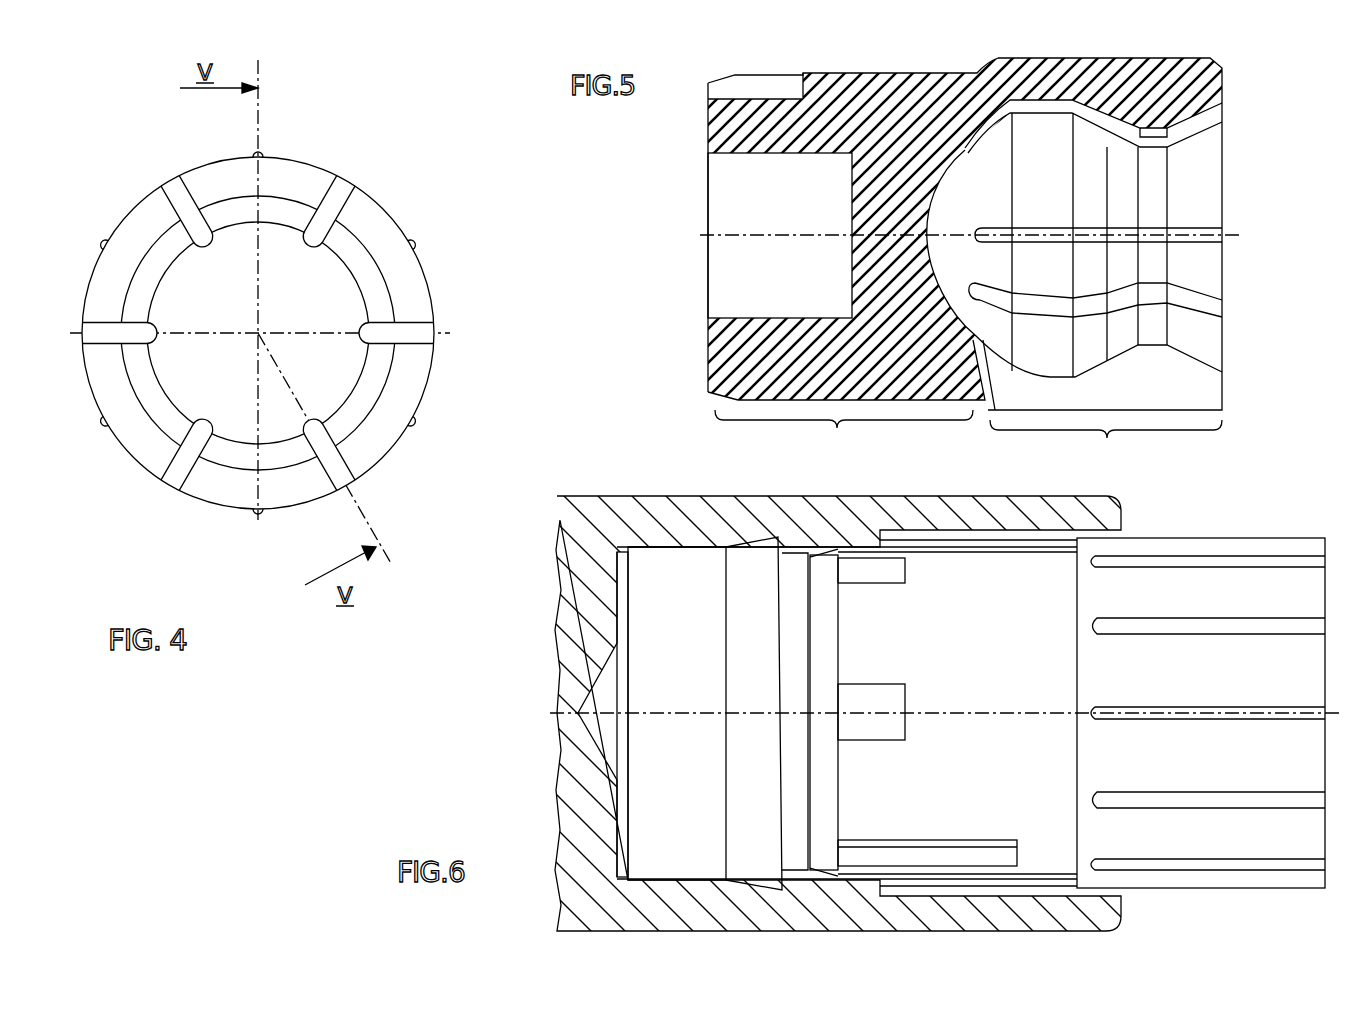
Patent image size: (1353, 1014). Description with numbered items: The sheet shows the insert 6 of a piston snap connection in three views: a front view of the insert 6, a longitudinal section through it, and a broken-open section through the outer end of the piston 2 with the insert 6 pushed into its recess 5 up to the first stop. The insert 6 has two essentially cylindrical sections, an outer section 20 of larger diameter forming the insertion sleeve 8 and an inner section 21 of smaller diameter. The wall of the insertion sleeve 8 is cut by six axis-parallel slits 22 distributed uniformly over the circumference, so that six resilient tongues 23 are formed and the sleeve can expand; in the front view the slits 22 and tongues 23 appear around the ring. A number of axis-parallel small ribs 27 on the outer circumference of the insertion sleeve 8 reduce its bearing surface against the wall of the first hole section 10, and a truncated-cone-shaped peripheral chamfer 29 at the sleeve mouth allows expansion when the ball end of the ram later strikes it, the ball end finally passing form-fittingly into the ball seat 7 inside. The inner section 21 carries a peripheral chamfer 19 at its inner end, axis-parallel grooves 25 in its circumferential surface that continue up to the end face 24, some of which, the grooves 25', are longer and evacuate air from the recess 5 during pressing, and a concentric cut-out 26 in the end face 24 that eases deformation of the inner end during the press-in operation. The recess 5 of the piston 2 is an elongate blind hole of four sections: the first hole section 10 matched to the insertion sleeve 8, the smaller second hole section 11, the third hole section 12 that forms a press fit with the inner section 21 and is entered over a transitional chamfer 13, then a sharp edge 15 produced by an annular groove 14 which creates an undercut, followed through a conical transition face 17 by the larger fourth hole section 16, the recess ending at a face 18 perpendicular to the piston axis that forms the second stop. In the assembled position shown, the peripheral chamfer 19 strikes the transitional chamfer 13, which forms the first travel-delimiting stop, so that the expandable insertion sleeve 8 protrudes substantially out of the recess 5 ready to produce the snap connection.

In FIG. 6, the piston 2 is at (586, 505).
In FIG. 6, the recess 5 is at (657, 597).
In FIG. 4, the insert 6 is at (326, 170).
In FIG. 5, the insert 6 is at (705, 334).
In FIG. 6, the insert 6 is at (940, 578).
In FIG. 4, the ball seat 7 is at (318, 303).
In FIG. 5, the ball seat 7 is at (935, 196).
In FIG. 4, the insertion sleeve 8 is at (385, 213).
In FIG. 5, the insertion sleeve 8 is at (1222, 67).
In FIG. 6, the insertion sleeve 8 is at (1206, 534).
In FIG. 6, the first hole section 10 is at (990, 538).
In FIG. 6, the second hole section 11 is at (848, 545).
In FIG. 6, the third hole section 12 is at (798, 565).
In FIG. 6, the transitional chamfer 13 is at (806, 556).
In FIG. 6, the annular groove 14 is at (764, 543).
In FIG. 6, the sharp edge 15 is at (775, 870).
In FIG. 6, the fourth hole section 16 is at (643, 755).
In FIG. 6, the conical transition face 17 is at (742, 883).
In FIG. 6, the face 18 is at (618, 812).
In FIG. 5, the peripheral chamfer 19 is at (712, 398).
In FIG. 6, the peripheral chamfer 19 is at (826, 628).
In FIG. 5, the outer section 20 is at (1106, 444).
In FIG. 5, the inner section 21 is at (844, 432).
In FIG. 4, the slits 22 is at (342, 200).
In FIG. 5, the slits 22 is at (1195, 133).
In FIG. 6, the slits 22 is at (1205, 627).
In FIG. 4, the resilient tongues 23 is at (295, 176).
In FIG. 5, the end face 24 is at (708, 140).
In FIG. 6, the end face 24 is at (808, 780).
In FIG. 5, the axis-parallel grooves 25 is at (731, 104).
In FIG. 6, the axis-parallel grooves 25 is at (871, 649).
In FIG. 6, the grooves of greater axial length 25' is at (927, 832).
In FIG. 5, the concentric cut-out 26 is at (737, 252).
In FIG. 4, the small ribs 27 is at (262, 155).
In FIG. 6, the small ribs 27 is at (1118, 562).
In FIG. 5, the peripheral chamfer 29 is at (1195, 118).